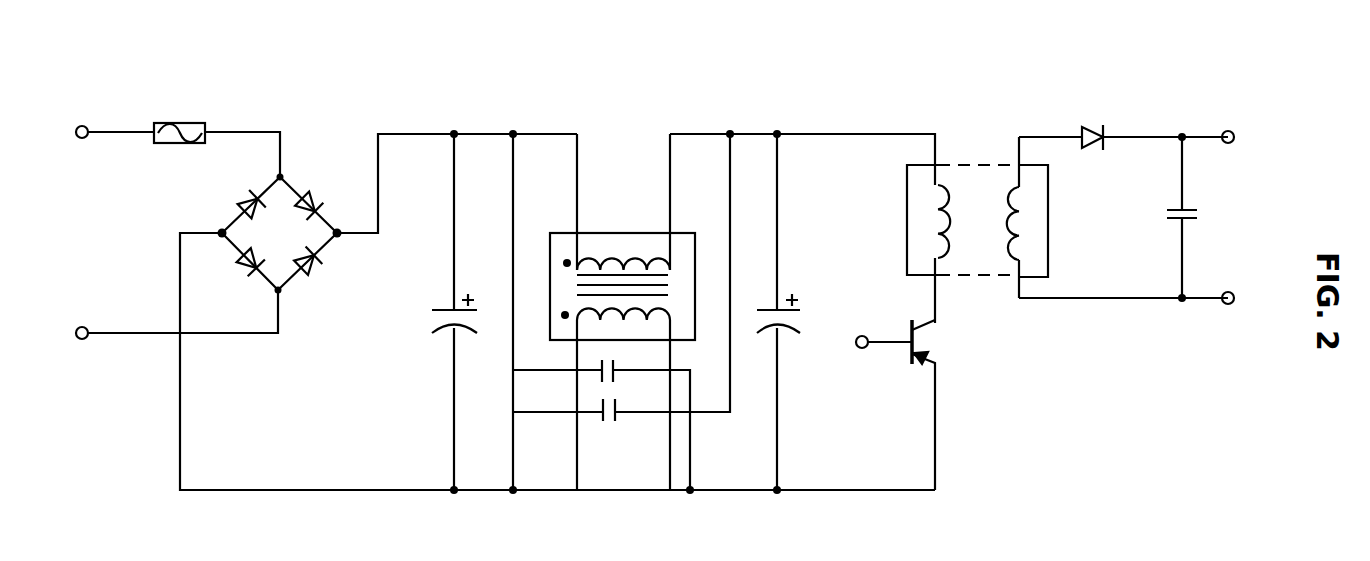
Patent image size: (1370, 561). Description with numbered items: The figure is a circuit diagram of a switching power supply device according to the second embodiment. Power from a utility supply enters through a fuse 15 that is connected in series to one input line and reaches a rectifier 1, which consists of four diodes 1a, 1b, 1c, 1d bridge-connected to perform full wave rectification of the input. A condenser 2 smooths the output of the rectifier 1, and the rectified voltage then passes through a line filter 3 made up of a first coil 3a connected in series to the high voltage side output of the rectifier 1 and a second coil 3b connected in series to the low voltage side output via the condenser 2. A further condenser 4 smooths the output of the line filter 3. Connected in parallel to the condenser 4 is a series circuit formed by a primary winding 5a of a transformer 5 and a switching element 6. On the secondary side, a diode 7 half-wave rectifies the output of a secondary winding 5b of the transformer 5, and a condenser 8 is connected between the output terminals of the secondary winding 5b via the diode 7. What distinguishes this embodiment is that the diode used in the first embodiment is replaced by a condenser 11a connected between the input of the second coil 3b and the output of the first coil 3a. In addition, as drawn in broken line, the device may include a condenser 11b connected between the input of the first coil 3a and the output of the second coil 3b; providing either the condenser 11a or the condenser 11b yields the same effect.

The rectifier 1 is at (245, 233).
The diode 1a is at (237, 207).
The diode 1b is at (308, 190).
The diode 1c is at (247, 273).
The diode 1d is at (307, 273).
The condenser 2 is at (440, 330).
The line filter 3 is at (613, 257).
The first coil 3a is at (632, 262).
The second coil 3b is at (653, 317).
The condenser 4 is at (783, 317).
The transformer 5 is at (958, 163).
The primary winding 5a is at (940, 220).
The secondary winding 5b is at (1015, 220).
The switching element 6 is at (923, 343).
The diode 7 is at (1088, 125).
The condenser 8 is at (1170, 216).
The condenser 11a is at (605, 420).
The condenser 11b is at (598, 375).
The fuse 15 is at (195, 122).